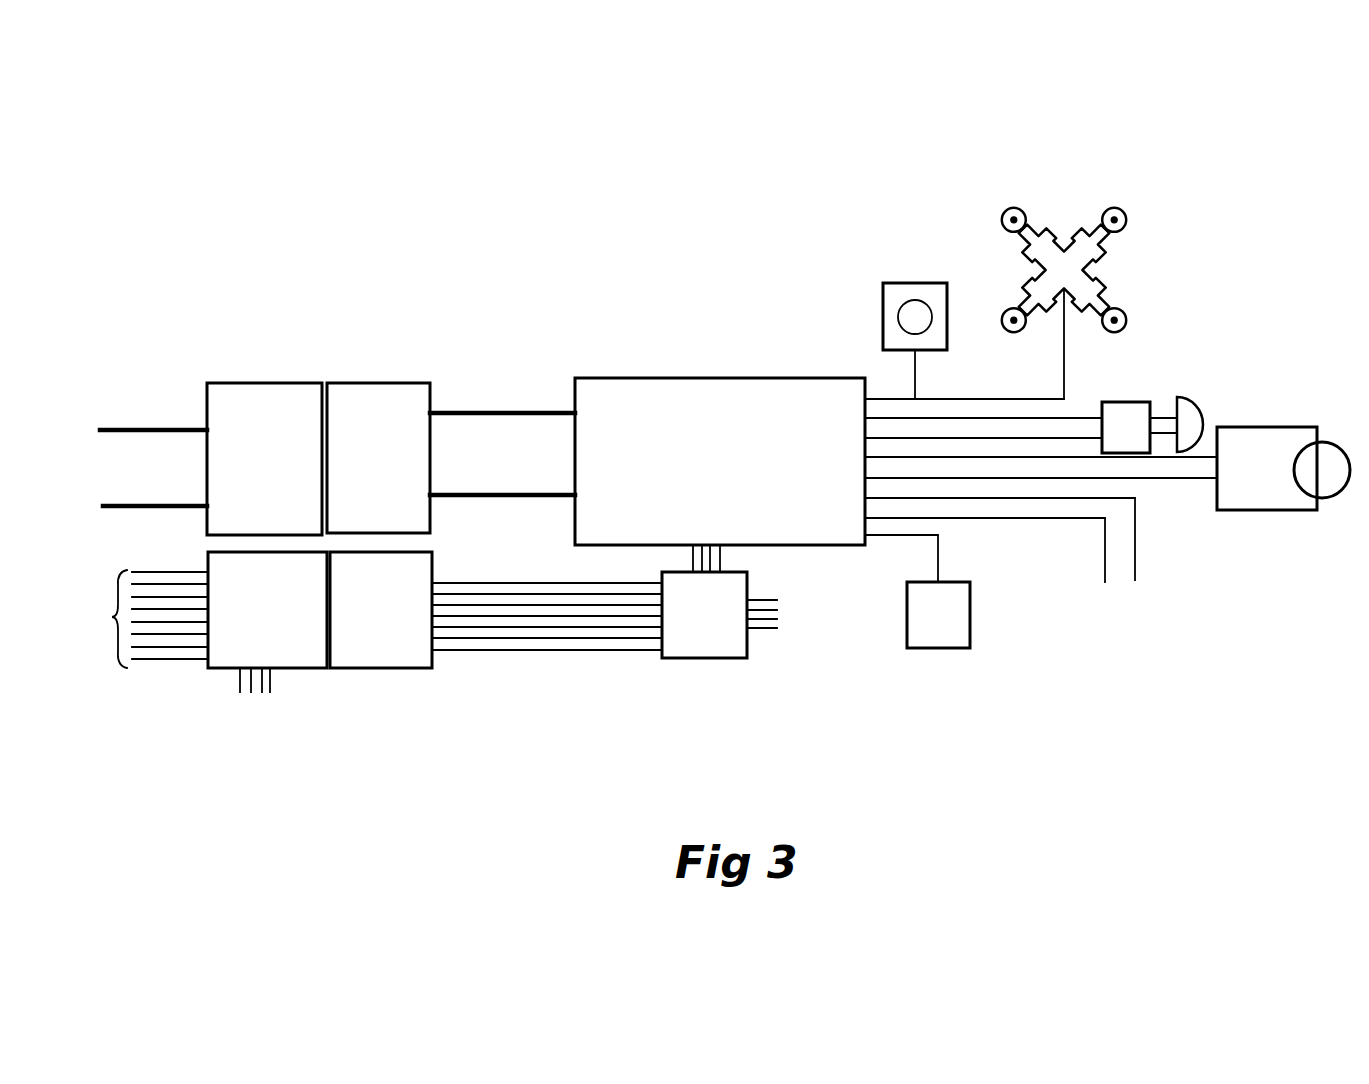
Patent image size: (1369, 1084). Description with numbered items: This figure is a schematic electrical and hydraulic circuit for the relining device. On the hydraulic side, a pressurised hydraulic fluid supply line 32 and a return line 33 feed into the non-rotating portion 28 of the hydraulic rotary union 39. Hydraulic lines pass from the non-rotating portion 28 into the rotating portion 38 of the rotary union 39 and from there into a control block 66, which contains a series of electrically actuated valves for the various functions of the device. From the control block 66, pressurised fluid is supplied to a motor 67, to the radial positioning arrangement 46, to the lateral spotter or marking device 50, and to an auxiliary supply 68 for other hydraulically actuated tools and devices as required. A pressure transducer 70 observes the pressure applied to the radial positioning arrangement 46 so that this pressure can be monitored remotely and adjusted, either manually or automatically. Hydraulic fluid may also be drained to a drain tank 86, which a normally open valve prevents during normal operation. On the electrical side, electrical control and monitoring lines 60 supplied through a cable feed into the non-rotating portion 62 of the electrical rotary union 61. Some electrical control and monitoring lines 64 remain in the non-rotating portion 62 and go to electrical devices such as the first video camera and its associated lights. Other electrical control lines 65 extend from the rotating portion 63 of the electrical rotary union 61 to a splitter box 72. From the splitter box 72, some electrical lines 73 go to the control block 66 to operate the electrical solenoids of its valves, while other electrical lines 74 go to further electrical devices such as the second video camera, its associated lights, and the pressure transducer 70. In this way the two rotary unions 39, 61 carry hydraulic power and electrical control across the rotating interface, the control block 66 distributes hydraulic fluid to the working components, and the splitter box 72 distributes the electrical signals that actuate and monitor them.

The non-rotating portion of the hydraulic rotary union 28 is at (267, 432).
The pressurised hydraulic fluid supply line 32 is at (150, 430).
The return line 33 is at (150, 506).
The rotating portion of the hydraulic rotary union 38 is at (398, 428).
The hydraulic rotary union 39 is at (300, 340).
The radial positioning arrangement 46 is at (1062, 272).
The lateral spotter or marking device 50 is at (1122, 422).
The electrical control and monitoring lines 60 is at (112, 622).
The electrical rotary union 61 is at (339, 670).
The non-rotating portion of the electrical rotary union 62 is at (272, 620).
The rotating portion of the electrical rotary union 63 is at (403, 623).
The electrical control and monitoring lines 64 is at (247, 685).
The electrical control lines 65 is at (547, 623).
The control block 66 is at (725, 445).
The motor 67 is at (1325, 458).
The auxiliary supply 68 is at (1118, 577).
The pressure transducer 70 is at (911, 305).
The splitter box 72 is at (720, 633).
The electrical lines 73 is at (712, 560).
The electrical lines 74 is at (768, 617).
The drain tank 86 is at (938, 622).